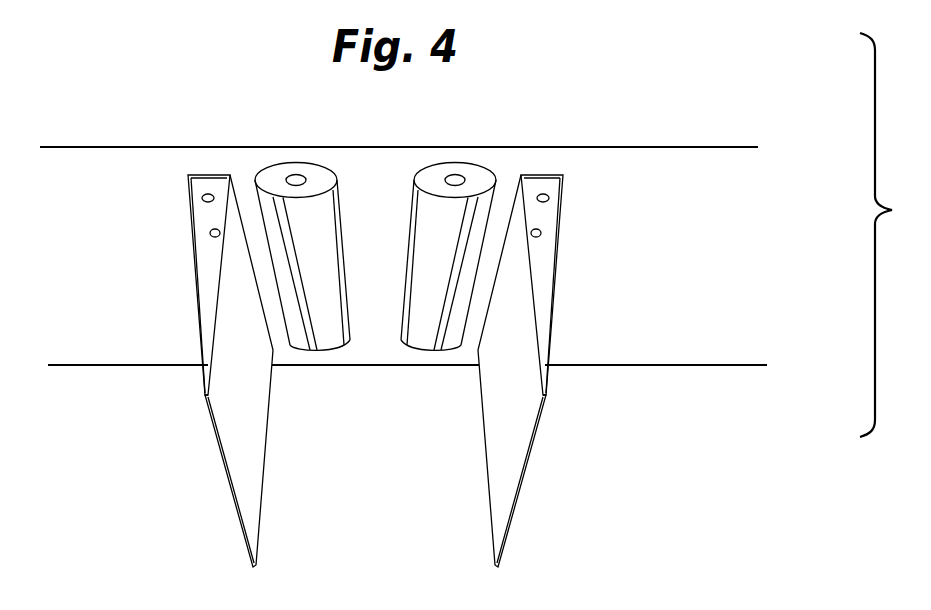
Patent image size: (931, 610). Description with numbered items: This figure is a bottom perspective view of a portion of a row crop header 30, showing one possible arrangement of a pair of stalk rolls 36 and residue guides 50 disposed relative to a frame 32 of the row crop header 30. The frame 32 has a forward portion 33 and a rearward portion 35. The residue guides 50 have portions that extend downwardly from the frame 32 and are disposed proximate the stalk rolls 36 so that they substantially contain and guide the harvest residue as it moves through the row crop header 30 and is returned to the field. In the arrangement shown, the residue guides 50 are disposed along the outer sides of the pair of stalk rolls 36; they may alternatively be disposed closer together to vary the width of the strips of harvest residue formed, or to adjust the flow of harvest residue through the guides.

The row crop header 30 is at (645, 121).
The frame 32 is at (752, 180).
The forward portion 33 is at (693, 363).
The rearward portion 35 is at (657, 147).
The stalk rolls 36 is at (318, 168).
The residue guides 50 is at (205, 383).